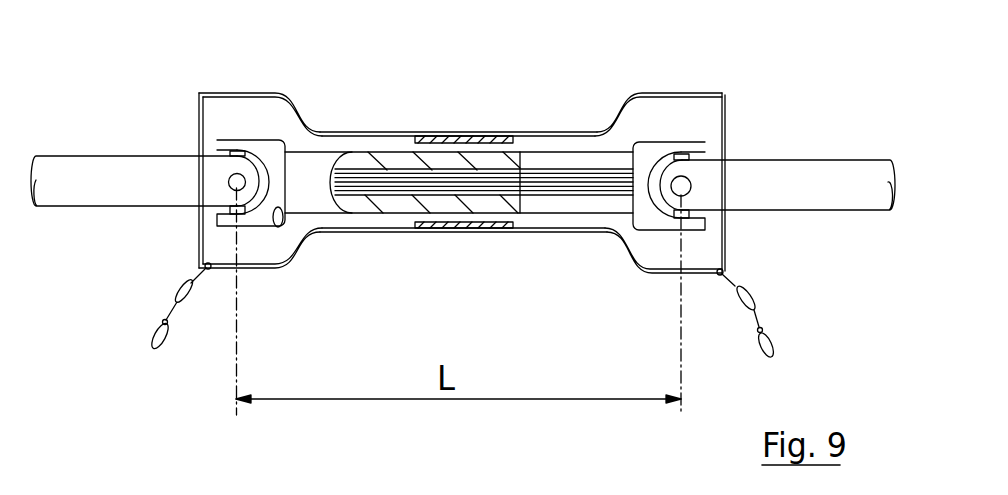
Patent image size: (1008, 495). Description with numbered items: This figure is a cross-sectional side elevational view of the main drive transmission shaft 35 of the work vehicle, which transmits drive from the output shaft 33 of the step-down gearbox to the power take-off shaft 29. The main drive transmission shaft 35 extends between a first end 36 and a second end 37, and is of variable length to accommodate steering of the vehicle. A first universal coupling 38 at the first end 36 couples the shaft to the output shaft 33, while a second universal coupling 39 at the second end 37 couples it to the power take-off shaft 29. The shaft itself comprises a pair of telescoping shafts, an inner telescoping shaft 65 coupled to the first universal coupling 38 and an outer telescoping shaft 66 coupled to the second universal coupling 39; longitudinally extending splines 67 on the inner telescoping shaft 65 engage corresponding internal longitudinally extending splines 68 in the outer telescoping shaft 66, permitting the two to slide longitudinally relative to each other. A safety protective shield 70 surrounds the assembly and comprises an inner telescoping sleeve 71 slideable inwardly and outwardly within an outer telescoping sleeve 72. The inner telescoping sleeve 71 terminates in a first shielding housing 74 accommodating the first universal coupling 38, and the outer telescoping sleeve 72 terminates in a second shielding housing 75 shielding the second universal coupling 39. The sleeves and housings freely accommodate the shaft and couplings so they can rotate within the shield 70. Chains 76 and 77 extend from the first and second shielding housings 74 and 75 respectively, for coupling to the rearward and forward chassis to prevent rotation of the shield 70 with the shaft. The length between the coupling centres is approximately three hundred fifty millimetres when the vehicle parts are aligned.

The power take-off shaft 29 is at (105, 170).
The output shaft 33 is at (785, 167).
The main drive transmission shaft 35 is at (468, 158).
The first end 36 is at (632, 203).
The second end 37 is at (277, 227).
The first universal coupling 38 is at (666, 147).
The second universal coupling 39 is at (258, 150).
The inner telescoping shaft 65 is at (573, 196).
The outer telescoping shaft 66 is at (318, 158).
The longitudinally extending splines 67 is at (550, 177).
The internal longitudinally extending splines 68 is at (413, 175).
The safety protective shield 70 is at (515, 83).
The inner telescoping sleeve 71 is at (535, 235).
The outer telescoping sleeve 72 is at (368, 233).
The first shielding housing 74 is at (700, 95).
The second shielding housing 75 is at (252, 92).
The chain 76 is at (770, 338).
The chain 77 is at (153, 349).